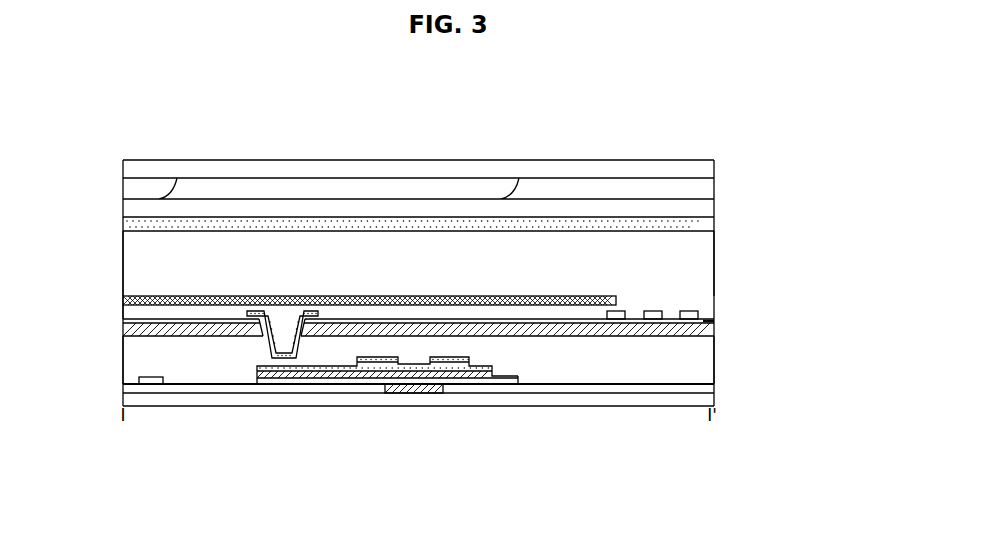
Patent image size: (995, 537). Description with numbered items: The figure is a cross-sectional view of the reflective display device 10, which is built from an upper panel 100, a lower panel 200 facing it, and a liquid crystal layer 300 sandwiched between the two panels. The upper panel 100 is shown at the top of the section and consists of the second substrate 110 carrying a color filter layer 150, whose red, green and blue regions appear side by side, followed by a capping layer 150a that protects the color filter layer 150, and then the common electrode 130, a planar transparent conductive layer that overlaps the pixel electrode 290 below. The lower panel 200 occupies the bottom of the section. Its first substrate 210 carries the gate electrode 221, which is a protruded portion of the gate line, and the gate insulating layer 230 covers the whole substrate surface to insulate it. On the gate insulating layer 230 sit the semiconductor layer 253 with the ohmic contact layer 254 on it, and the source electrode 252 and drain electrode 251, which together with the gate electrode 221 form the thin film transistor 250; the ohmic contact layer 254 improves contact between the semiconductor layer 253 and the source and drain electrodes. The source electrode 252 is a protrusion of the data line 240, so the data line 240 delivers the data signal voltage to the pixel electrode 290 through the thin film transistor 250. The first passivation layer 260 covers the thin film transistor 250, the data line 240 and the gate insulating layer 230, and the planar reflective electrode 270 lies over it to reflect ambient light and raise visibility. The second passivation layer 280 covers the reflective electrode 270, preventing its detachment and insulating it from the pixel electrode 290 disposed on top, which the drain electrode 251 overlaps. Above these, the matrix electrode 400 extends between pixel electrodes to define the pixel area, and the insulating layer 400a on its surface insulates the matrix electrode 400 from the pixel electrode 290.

The reflective display device 10 is at (466, 140).
The upper panel 100 is at (787, 160).
The second substrate 110 is at (700, 170).
The color filter layer 150 is at (700, 188).
The capping layer 150a is at (700, 207).
The common electrode 130 is at (700, 222).
The liquid crystal layer 300 is at (696, 253).
The matrix electrode 400 is at (125, 299).
The insulating layer 400a is at (130, 313).
The lower panel 200 is at (787, 292).
The pixel electrode 290 is at (281, 336).
The second passivation layer 280 is at (705, 320).
The reflective electrode 270 is at (705, 329).
The first passivation layer 260 is at (705, 358).
The gate insulating layer 230 is at (705, 385).
The first substrate 210 is at (705, 401).
The data line 240 is at (151, 384).
The thin film transistor 250 is at (350, 450).
The drain electrode 251 is at (375, 371).
The source electrode 252 is at (448, 371).
The semiconductor layer 253 is at (402, 374).
The ohmic contact layer 254 is at (283, 385).
The gate electrode 221 is at (412, 389).